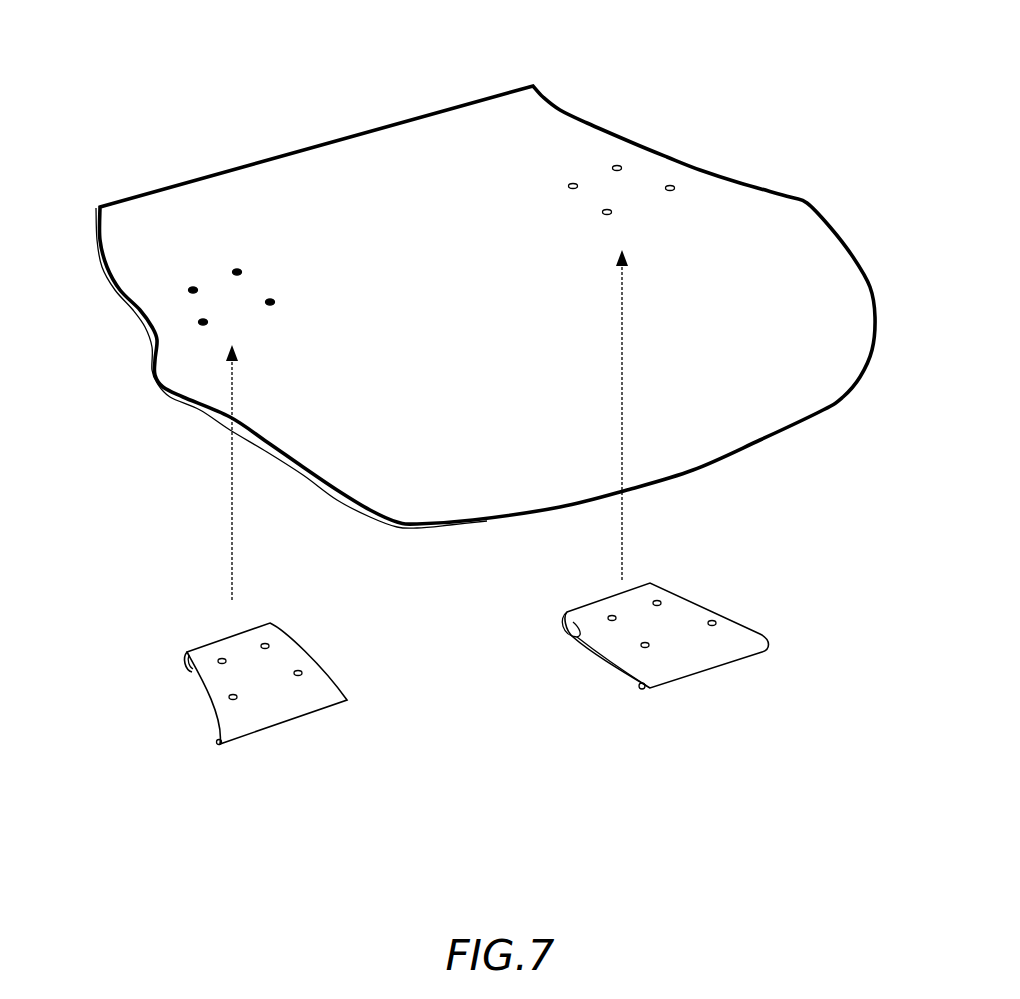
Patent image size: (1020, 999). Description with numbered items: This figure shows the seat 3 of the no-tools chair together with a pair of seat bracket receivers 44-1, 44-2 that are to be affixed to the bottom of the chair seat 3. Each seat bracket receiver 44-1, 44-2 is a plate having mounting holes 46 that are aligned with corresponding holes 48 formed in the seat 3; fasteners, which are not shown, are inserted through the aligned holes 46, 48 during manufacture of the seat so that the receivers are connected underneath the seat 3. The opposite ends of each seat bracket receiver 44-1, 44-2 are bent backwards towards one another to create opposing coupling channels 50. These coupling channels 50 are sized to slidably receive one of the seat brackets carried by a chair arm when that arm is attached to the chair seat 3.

The chair seat 3 is at (293, 145).
The holes 48 is at (673, 187).
The seat bracket receiver 44-1 is at (288, 712).
The seat bracket receiver 44-2 is at (693, 657).
The mounting holes 46 is at (229, 697).
The coupling channels 50 is at (187, 662).